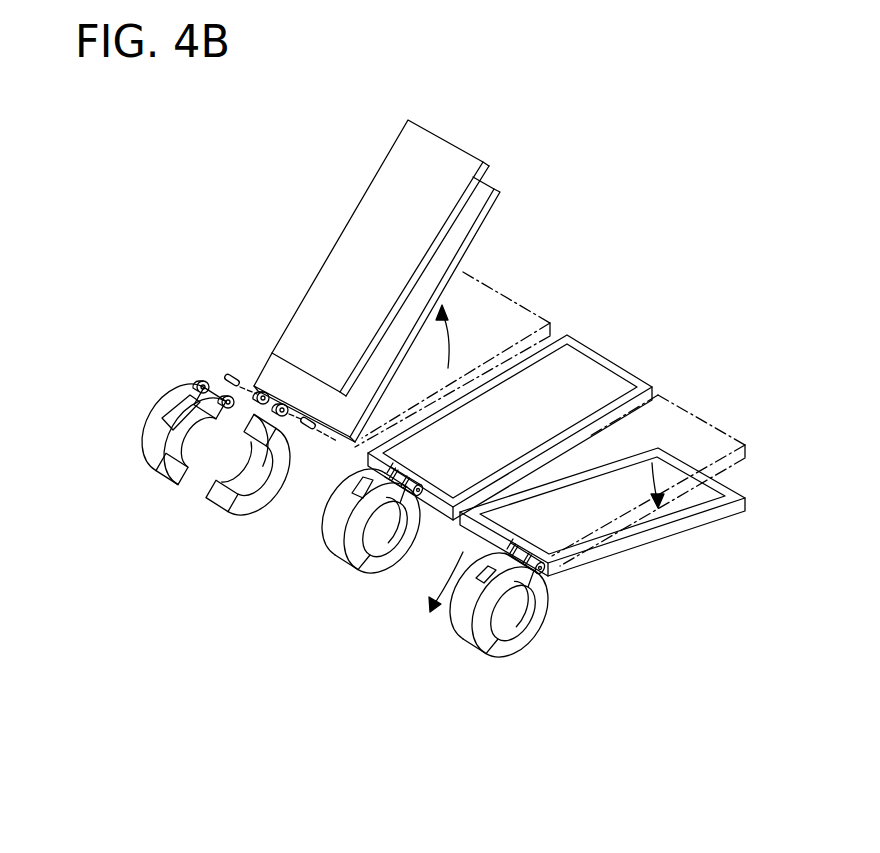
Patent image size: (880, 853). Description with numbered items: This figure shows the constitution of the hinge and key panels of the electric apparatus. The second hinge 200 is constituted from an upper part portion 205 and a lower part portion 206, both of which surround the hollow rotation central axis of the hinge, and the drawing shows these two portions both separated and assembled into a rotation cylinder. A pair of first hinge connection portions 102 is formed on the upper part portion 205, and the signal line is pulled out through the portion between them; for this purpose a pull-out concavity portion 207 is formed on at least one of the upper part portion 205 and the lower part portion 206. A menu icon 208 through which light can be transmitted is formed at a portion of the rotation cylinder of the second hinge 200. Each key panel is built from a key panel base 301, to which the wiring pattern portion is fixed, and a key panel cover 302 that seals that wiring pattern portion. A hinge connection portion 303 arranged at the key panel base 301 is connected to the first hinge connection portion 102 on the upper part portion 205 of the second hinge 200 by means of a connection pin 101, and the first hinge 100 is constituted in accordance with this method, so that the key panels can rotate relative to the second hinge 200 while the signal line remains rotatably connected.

The first hinge 100 is at (402, 478).
The connection pin 101 is at (230, 374).
The first hinge connection portion 102 is at (199, 382).
The second hinge 200 is at (228, 580).
The upper part portion 205 is at (155, 466).
The lower part portion 206 is at (251, 508).
The pull-out concavity portion 207 is at (257, 450).
The menu icon 208 is at (172, 408).
The key panel base 301 is at (485, 185).
The key panel cover 302 is at (440, 145).
The hinge connection portion 303 is at (261, 392).